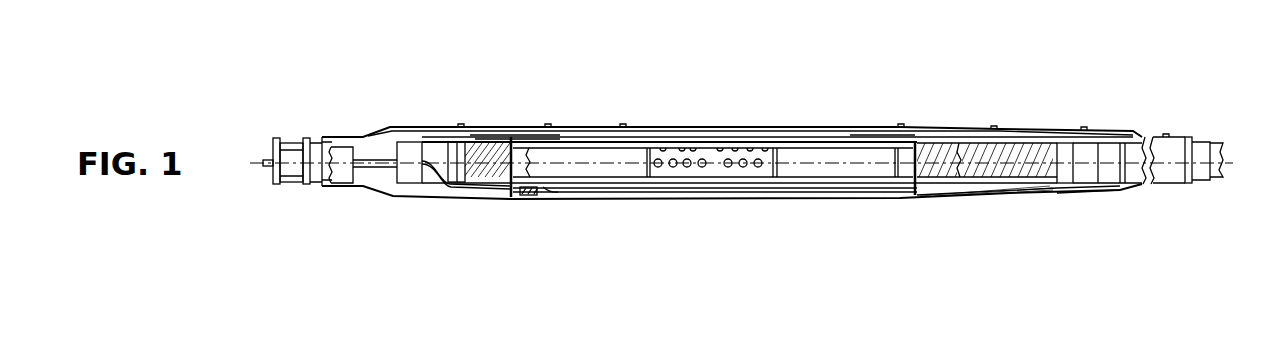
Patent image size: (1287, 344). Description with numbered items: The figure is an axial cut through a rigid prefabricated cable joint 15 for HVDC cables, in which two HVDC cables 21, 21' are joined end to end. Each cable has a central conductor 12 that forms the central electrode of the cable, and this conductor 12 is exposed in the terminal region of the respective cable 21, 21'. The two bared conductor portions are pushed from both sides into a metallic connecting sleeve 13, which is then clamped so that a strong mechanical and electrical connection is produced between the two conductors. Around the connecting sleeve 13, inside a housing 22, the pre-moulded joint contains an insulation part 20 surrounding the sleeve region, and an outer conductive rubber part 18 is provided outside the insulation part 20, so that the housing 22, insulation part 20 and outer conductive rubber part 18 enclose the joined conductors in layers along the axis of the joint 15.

The HVDC cable 21' is at (323, 108).
The metallic connecting sleeve 13 is at (672, 151).
The insulation part 20 is at (733, 138).
The central conductor 12 is at (797, 155).
The outer conductive rubber part 18 is at (853, 138).
The prefabricated cable joint 15 is at (1022, 120).
The HVDC cable 21 is at (1144, 108).
The housing 22 is at (1088, 193).